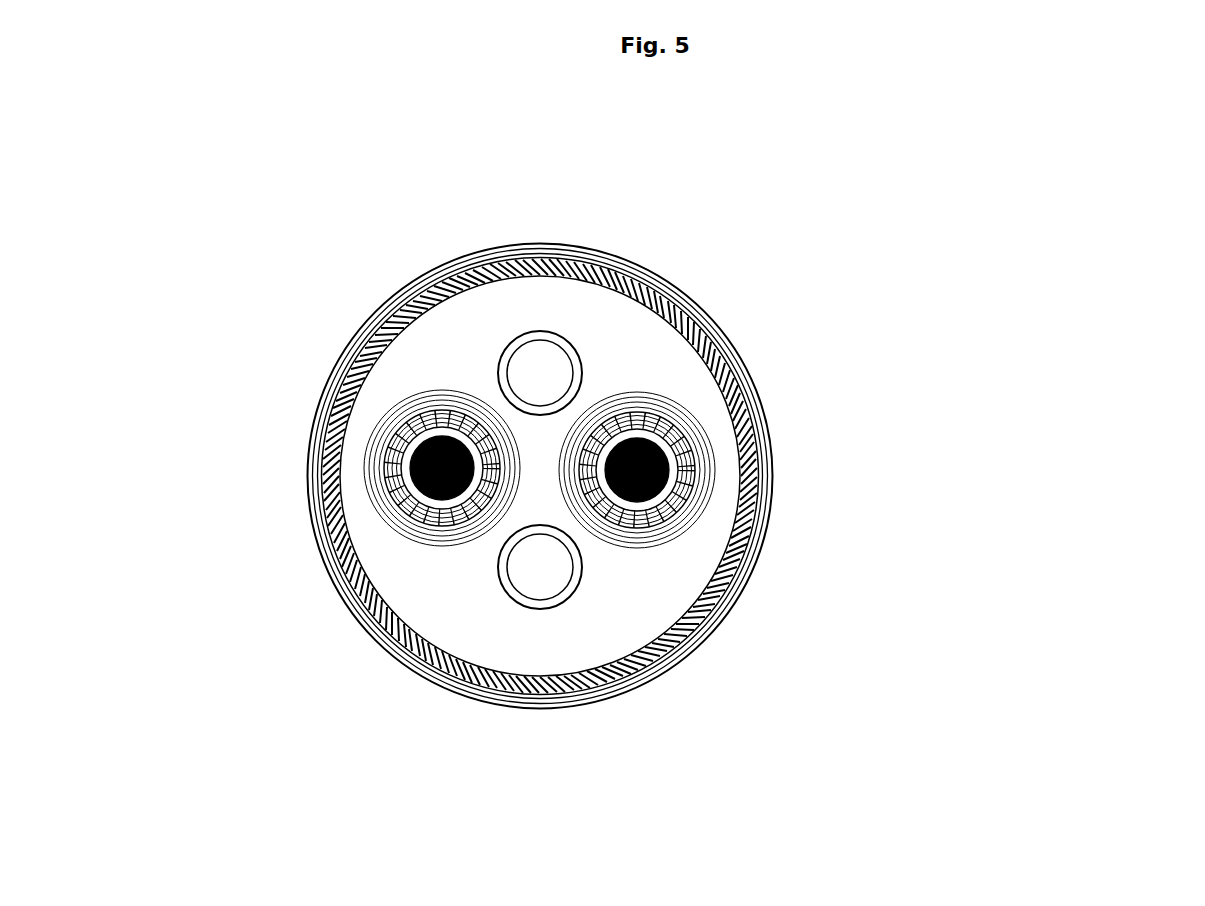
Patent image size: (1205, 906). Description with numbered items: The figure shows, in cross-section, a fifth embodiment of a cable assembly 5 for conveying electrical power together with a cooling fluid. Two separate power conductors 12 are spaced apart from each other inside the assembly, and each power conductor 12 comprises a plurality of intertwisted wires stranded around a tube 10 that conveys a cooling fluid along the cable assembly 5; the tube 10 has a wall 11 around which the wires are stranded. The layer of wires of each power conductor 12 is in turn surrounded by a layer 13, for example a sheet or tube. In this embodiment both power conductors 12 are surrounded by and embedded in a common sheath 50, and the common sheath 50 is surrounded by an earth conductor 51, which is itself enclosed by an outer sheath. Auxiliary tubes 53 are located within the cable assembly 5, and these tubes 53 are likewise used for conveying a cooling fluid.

The cable assembly 5 is at (1020, 349).
The tube 10 is at (620, 481).
The wall 11 is at (417, 446).
The power conductor 12 is at (460, 403).
The layer 13 is at (402, 528).
The common sheath 50 is at (587, 297).
The earth conductor 51 is at (670, 283).
The auxiliary tube 53 is at (538, 378).